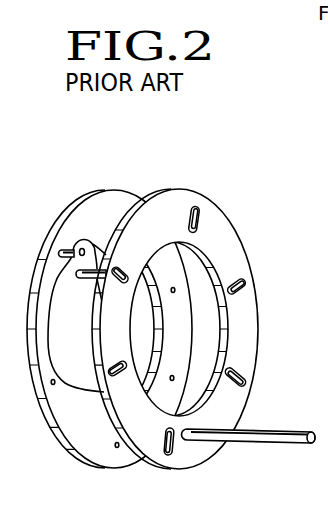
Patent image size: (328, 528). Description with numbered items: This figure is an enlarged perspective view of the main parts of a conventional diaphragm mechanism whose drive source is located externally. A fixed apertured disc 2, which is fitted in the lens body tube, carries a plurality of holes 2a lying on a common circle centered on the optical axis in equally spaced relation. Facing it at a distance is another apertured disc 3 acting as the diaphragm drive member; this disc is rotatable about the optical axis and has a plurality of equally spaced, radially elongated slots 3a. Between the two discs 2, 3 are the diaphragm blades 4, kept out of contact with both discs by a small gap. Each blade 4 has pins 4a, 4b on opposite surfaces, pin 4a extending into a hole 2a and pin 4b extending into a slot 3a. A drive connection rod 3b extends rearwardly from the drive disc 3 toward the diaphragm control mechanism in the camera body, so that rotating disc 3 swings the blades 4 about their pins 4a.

The apertured disc 2 is at (110, 202).
The holes 2a is at (63, 390).
The apertured disc 3 is at (148, 442).
The radially elongated slots 3a is at (122, 268).
The drive connection rod 3b is at (285, 428).
The diaphragm blades 4 is at (55, 276).
The pin 4a is at (70, 248).
The pin 4b is at (82, 281).